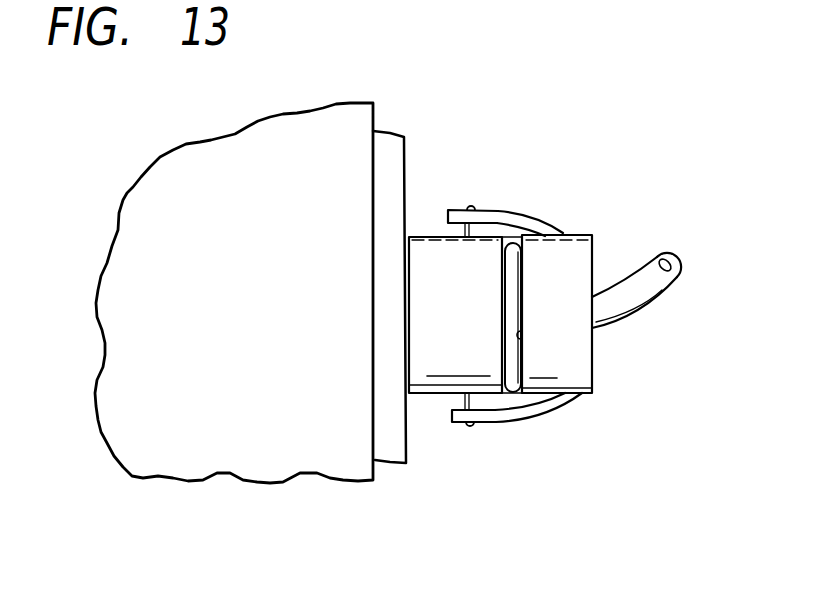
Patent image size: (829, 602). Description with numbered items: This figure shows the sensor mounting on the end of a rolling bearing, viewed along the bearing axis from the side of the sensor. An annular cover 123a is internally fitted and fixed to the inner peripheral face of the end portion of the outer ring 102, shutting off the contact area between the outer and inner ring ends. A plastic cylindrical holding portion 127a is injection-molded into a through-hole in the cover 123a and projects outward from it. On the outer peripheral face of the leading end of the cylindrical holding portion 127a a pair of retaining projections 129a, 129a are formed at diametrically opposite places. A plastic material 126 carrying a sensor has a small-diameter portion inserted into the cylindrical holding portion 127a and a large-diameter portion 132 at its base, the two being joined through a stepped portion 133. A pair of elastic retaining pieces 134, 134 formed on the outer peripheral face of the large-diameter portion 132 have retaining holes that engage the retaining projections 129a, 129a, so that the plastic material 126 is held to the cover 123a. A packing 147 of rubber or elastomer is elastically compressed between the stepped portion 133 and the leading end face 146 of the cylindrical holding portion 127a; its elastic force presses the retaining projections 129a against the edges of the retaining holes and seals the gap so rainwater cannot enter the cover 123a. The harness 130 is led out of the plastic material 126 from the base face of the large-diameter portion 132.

The outer ring 102 is at (203, 162).
The annular cover 123a is at (407, 435).
The plastic material 126 is at (554, 297).
The cylindrical holding portion 127a is at (433, 235).
The retaining projections 129a is at (471, 207).
The harness 130 is at (650, 288).
The large-diameter portion 132 is at (578, 248).
The stepped portion 133 is at (522, 343).
The elastic retaining pieces 134 is at (521, 217).
The leading end face 146 is at (580, 390).
The packing 147 is at (563, 233).